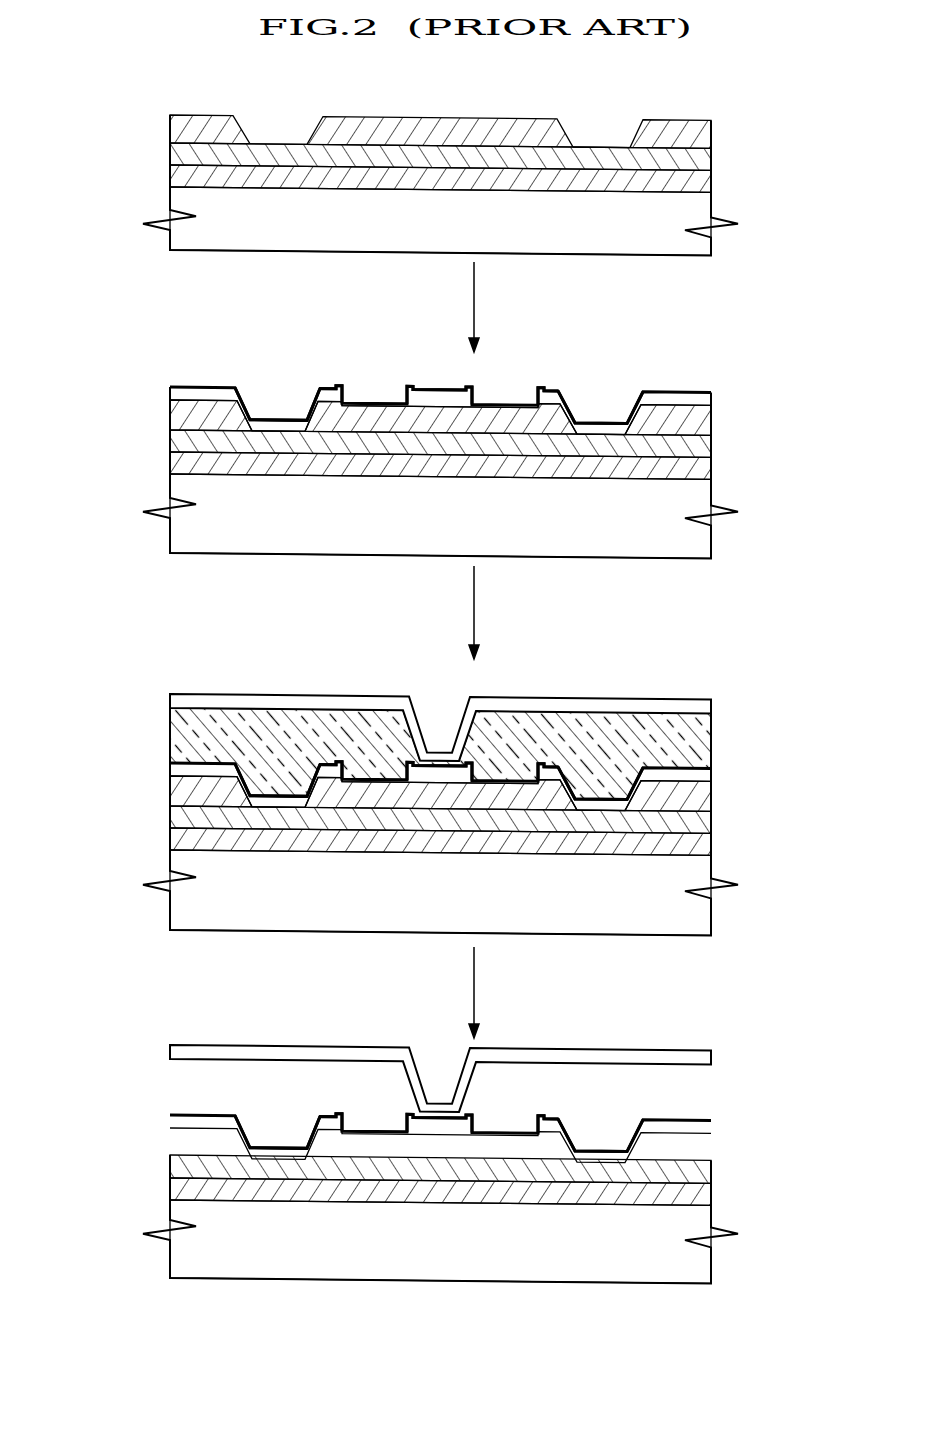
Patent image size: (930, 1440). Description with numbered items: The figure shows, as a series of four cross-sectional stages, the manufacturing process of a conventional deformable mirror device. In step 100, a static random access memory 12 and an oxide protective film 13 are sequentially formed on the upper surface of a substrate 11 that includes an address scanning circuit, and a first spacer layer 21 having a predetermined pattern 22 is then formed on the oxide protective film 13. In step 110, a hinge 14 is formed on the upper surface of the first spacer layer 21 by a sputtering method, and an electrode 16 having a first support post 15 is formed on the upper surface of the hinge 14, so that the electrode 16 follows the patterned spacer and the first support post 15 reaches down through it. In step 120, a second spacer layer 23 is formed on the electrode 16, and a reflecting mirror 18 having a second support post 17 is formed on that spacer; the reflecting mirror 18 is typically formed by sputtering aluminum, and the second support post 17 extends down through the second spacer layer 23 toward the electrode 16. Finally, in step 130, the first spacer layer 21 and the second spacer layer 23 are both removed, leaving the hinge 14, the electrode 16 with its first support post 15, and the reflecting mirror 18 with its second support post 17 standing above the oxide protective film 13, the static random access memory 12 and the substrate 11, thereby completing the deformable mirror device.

The substrate 11 is at (700, 238).
The static random access memory 12 is at (700, 176).
The oxide protective film 13 is at (700, 154).
The hinge 14 is at (345, 388).
The first support post 15 is at (281, 412).
The electrode 16 is at (700, 390).
The second support post 17 is at (420, 722).
The reflecting mirror 18 is at (700, 701).
The first spacer layer 21 is at (700, 126).
The predetermined pattern 22 is at (590, 141).
The second spacer layer 23 is at (700, 735).
The step 100 is at (148, 133).
The step 110 is at (148, 401).
The step 120 is at (148, 721).
The step 130 is at (148, 1101).